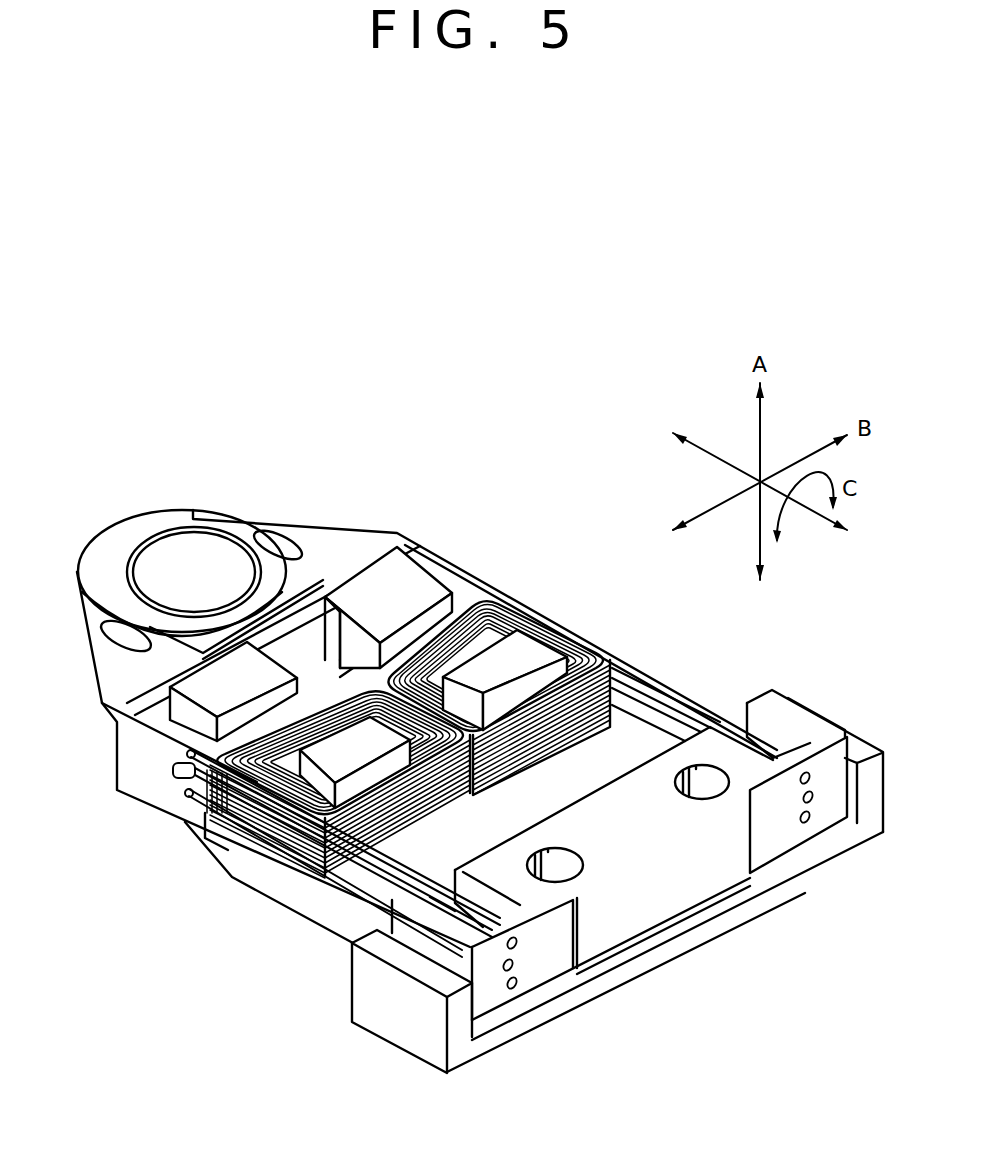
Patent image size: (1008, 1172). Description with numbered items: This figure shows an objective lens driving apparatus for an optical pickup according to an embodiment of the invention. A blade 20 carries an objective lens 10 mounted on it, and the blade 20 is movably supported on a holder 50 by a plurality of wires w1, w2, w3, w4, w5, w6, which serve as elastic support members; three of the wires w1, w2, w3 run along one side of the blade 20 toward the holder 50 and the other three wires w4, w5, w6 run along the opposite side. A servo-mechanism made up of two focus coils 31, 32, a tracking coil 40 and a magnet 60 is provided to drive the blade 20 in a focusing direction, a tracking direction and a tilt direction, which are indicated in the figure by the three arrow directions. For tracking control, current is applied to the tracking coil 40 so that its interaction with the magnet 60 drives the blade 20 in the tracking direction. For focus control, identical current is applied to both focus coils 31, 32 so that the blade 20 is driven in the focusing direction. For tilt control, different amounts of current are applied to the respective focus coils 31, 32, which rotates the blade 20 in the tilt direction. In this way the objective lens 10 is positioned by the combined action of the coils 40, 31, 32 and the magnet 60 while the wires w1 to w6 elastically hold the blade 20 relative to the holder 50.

The objective lens 10 is at (165, 547).
The blade 20 is at (312, 537).
The tracking coil 40 is at (467, 617).
The magnet 60 is at (260, 680).
The holder 50 is at (603, 853).
The focus coil 31 is at (570, 730).
The focus coil 32 is at (437, 823).
The wire w1 is at (630, 672).
The wire w2 is at (653, 705).
The wire w3 is at (667, 732).
The wire w4 is at (203, 795).
The wire w5 is at (235, 818).
The wire w6 is at (272, 845).